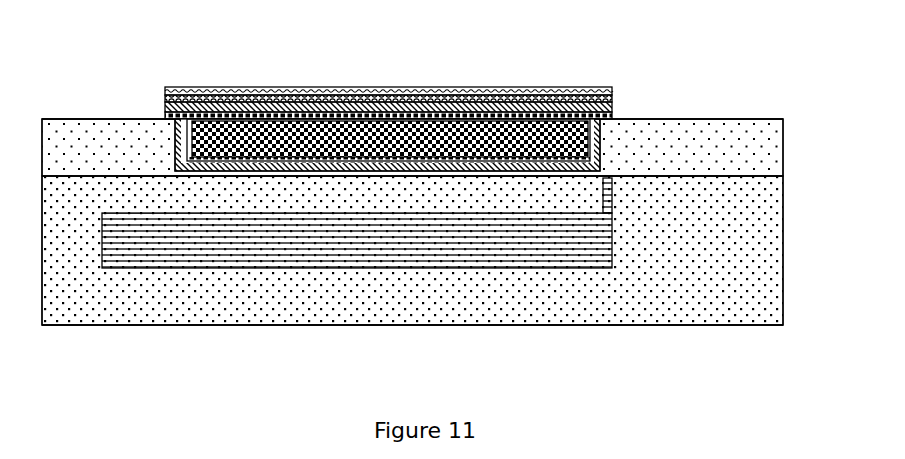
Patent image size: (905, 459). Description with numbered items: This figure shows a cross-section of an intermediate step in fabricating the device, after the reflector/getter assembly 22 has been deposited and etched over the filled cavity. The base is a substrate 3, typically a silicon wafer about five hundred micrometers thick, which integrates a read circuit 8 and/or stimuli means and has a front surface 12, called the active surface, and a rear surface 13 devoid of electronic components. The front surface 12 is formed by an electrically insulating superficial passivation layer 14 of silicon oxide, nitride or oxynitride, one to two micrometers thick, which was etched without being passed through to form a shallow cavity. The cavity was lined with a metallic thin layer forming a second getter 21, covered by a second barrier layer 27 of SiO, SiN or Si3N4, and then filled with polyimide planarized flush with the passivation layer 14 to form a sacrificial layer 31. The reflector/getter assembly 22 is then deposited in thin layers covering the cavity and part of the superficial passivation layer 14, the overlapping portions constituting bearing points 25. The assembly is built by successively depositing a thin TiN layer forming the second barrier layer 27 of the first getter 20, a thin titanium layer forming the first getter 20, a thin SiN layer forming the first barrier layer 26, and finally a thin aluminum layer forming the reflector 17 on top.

The substrate 3 is at (746, 214).
The read circuit 8 is at (612, 262).
The front surface 12 is at (665, 119).
The rear surface 13 is at (705, 325).
The superficial passivation layer 14 is at (746, 130).
The reflector 17 is at (280, 93).
The first getter 20 is at (475, 118).
The second getter 21 is at (507, 170).
The reflector/getter assembly 22 is at (300, 102).
The bearing points 25 is at (110, 114).
The first barrier layer 26 is at (547, 98).
The second barrier layer 27 is at (416, 120).
The sacrificial layer 31 is at (378, 153).